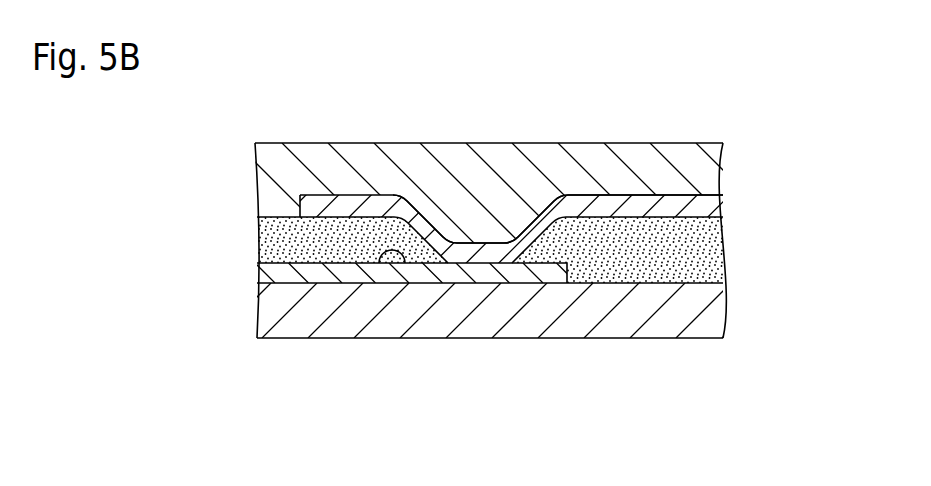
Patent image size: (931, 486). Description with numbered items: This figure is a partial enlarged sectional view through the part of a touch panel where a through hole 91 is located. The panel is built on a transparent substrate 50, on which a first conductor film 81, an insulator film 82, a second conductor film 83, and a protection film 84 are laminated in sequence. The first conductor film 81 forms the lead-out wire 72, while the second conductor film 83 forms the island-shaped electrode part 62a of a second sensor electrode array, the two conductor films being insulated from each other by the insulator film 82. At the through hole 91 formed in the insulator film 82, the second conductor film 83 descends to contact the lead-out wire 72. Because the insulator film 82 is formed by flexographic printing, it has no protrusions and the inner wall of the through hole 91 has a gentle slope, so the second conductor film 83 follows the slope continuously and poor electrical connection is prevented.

The transparent substrate 50 is at (253, 312).
The lead-out wire 72 is at (381, 263).
The first conductor film 81 is at (255, 272).
The insulator film 82 is at (258, 230).
The second conductor film 83 is at (718, 207).
The protection film 84 is at (720, 163).
The through hole 91 is at (433, 231).
The island-shaped electrode part 62a is at (590, 195).